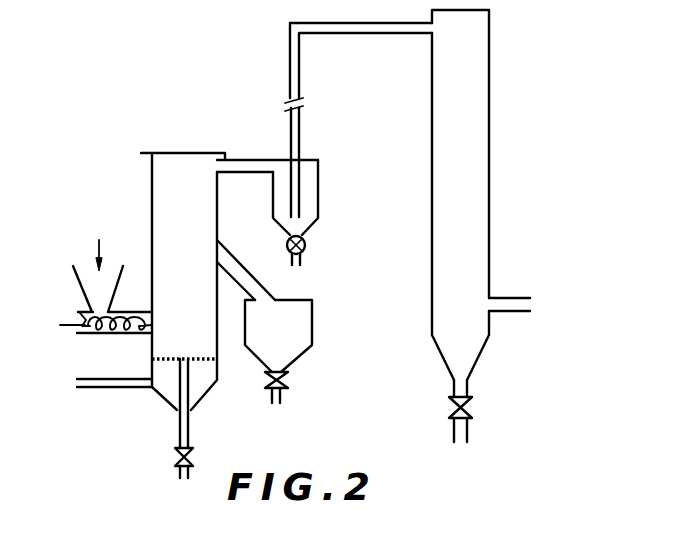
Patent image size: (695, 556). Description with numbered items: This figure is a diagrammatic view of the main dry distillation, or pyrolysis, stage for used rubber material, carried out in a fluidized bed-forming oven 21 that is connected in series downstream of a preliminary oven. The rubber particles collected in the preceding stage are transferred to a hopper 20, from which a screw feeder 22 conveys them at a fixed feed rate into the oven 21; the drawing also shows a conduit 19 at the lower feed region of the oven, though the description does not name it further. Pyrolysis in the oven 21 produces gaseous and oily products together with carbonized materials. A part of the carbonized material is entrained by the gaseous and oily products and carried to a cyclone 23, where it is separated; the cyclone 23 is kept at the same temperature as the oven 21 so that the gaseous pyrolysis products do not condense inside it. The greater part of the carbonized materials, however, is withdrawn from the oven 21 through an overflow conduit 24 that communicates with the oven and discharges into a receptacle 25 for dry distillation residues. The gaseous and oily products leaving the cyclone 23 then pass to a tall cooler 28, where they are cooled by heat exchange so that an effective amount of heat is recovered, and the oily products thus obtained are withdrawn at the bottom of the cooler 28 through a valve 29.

The feed conduit 19 is at (108, 388).
The hopper 20 is at (81, 289).
The fluidized bed-forming oven 21 is at (152, 185).
The screw feeder 22 is at (118, 330).
The cyclone 23 is at (318, 188).
The overflow conduit 24 is at (232, 258).
The receptacle for dry distillation residues 25 is at (312, 332).
The cooler 28 is at (489, 83).
The valve 29 is at (468, 406).